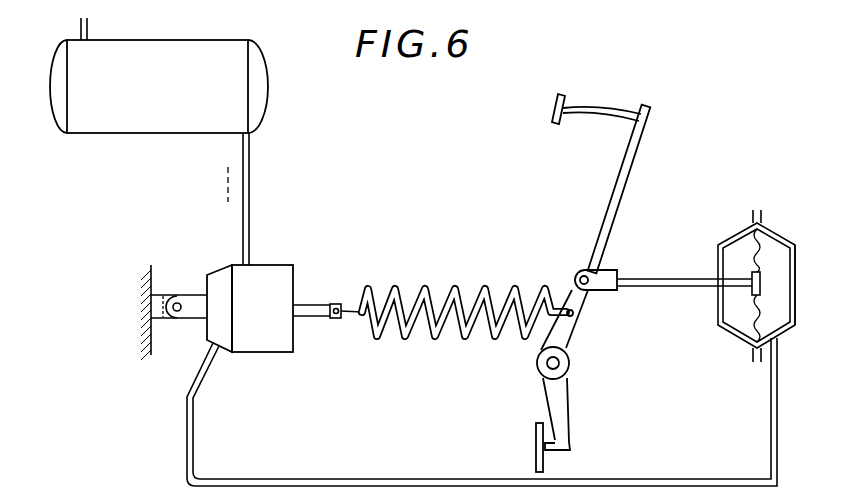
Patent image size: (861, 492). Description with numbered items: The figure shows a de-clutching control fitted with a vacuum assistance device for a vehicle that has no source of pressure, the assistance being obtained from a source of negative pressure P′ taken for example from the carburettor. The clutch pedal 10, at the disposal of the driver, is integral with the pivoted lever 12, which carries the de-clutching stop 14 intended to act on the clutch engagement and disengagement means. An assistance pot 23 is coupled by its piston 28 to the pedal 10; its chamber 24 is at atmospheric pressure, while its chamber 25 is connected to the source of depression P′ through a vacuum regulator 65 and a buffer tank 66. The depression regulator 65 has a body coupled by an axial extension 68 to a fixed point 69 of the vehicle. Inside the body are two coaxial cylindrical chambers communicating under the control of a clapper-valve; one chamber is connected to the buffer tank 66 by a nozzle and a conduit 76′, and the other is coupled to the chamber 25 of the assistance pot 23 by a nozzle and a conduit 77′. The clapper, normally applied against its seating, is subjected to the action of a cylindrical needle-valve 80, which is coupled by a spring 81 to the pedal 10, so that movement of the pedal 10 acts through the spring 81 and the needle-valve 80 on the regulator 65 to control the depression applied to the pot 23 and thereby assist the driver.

The clutch pedal 10 is at (634, 183).
The lever 12 is at (558, 394).
The de-clutching stop 14 is at (536, 450).
The assistance pot 23 is at (744, 366).
The chamber 24 is at (730, 250).
The chamber 25 is at (777, 245).
The piston 28 is at (663, 288).
The vacuum regulator 65 is at (276, 263).
The buffer tank 66 is at (272, 106).
The axial extension 68 is at (193, 300).
The fixed point 69 is at (163, 322).
The conduit 76′ is at (249, 188).
The conduit 77′ is at (316, 478).
The cylindrical needle-valve 80 is at (329, 304).
The spring 81 is at (483, 292).
The source of negative pressure P′ is at (80, 26).